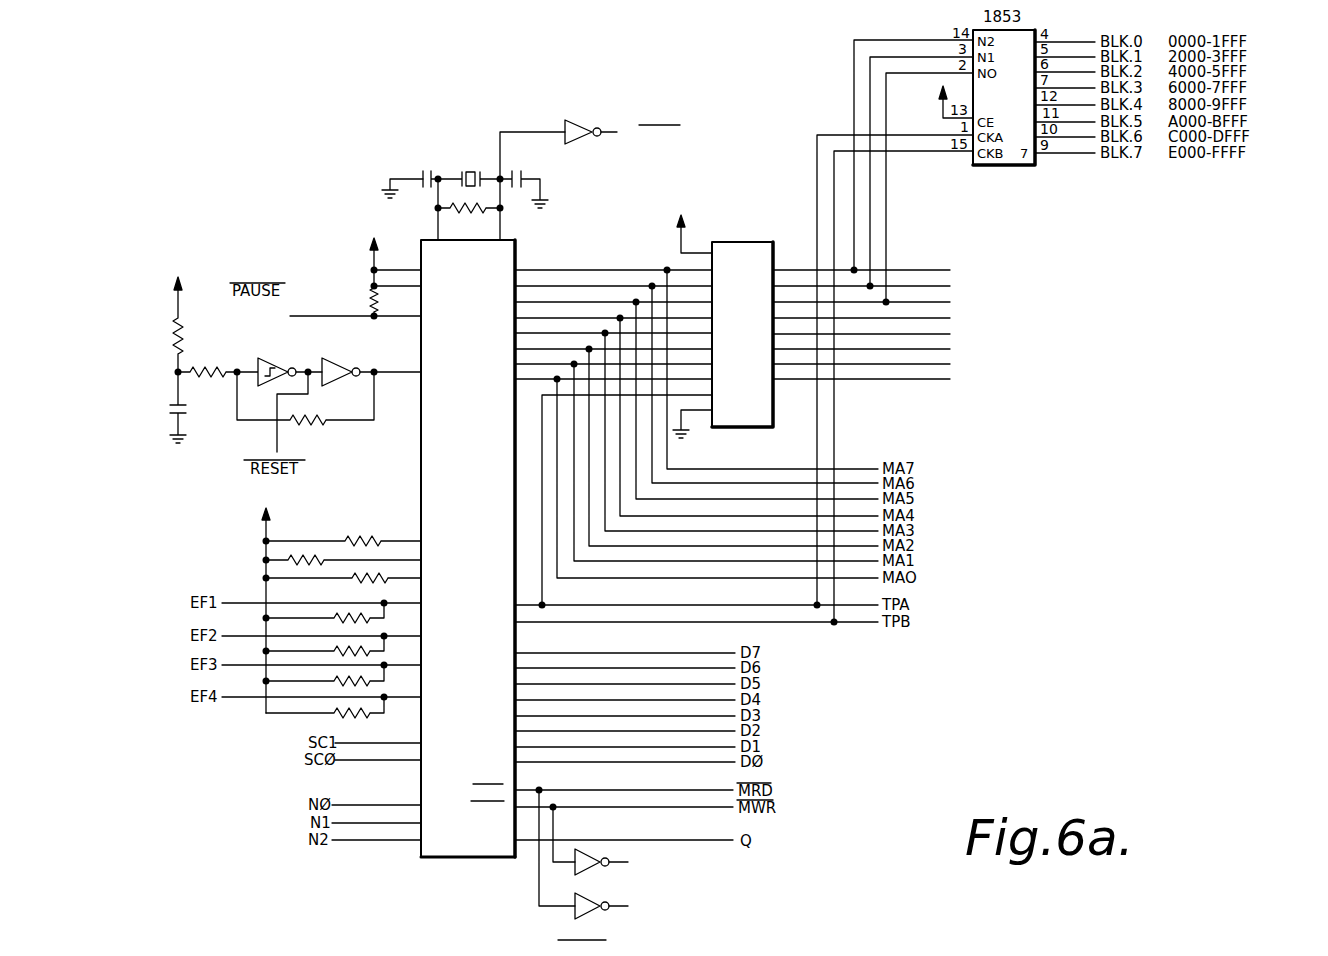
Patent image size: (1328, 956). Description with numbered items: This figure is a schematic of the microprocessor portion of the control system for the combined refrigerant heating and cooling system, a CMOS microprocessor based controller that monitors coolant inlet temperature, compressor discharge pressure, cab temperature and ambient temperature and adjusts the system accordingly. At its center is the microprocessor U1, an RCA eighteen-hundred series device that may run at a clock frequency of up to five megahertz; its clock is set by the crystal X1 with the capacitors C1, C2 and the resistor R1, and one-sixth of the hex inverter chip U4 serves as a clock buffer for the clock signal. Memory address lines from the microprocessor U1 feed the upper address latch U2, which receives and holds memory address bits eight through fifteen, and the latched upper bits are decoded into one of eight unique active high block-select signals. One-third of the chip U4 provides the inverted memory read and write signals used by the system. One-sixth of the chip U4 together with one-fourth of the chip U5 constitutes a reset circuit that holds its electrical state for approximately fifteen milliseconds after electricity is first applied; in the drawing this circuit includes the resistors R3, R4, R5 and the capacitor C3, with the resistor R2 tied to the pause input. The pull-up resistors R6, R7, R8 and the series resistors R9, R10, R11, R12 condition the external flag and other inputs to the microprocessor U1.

The microprocessor U1 is at (468, 540).
The upper address latch U2 is at (835, 326).
The hex inverter chip U4 is at (596, 873).
The quad gate chip U5 is at (279, 355).
The 10M resistor R1 is at (469, 209).
The 47K resistor R2 is at (355, 279).
The 330K resistor R3 is at (200, 324).
The 20K resistor R4 is at (207, 370).
The 100K resistor R5 is at (305, 407).
The 47K resistor R6 is at (343, 526).
The 47K resistor R7 is at (324, 558).
The 47K resistor R8 is at (352, 580).
The 47K resistor R9 is at (366, 616).
The 47K resistor R10 is at (366, 654).
The 47K resistor R11 is at (366, 684).
The 47K resistor R12 is at (366, 716).
The 20pF capacitor C1 is at (417, 160).
The 20pF capacitor C2 is at (524, 171).
The .05uF capacitor C3 is at (156, 408).
The 4MHz crystal X1 is at (469, 160).